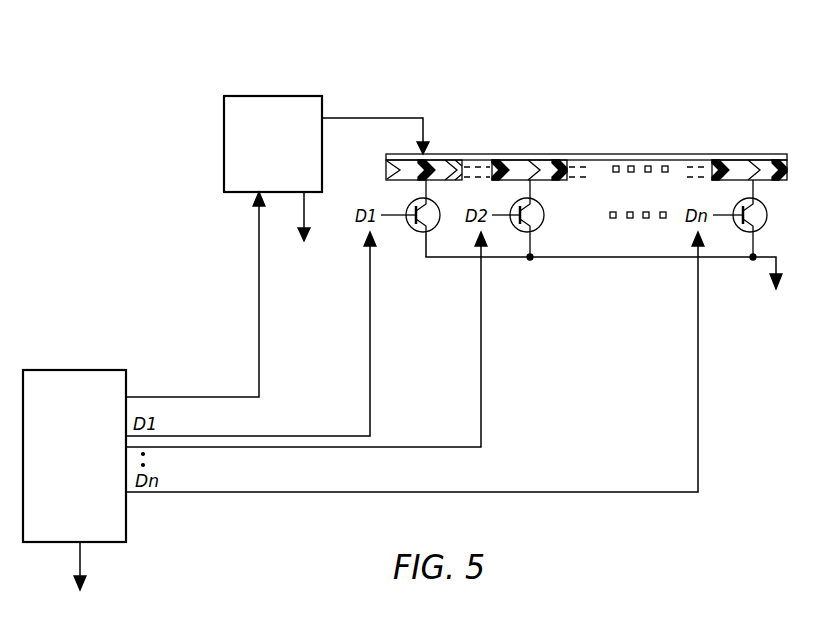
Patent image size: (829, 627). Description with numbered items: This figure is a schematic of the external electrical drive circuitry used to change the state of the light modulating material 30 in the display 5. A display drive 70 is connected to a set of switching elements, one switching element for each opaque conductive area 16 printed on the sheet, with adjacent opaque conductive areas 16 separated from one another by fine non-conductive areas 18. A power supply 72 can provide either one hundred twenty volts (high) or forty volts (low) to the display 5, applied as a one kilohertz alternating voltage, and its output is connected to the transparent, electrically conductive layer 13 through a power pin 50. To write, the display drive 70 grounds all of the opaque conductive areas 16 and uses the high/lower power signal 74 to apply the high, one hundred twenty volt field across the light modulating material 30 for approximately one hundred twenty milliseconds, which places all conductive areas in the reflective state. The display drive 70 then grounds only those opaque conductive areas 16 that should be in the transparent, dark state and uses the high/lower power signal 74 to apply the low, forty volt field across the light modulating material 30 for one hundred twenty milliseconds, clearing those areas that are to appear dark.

The display 5 is at (646, 88).
The transparent, electrically conductive layer 13 is at (625, 155).
The opaque conductive area 16 is at (556, 181).
The non-conductive area 18 is at (477, 160).
The light modulating material 30 is at (555, 160).
The power pin 50 is at (431, 142).
The display drive 70 is at (72, 380).
The power supply 72 is at (224, 119).
The high/lower power signal 74 is at (259, 282).